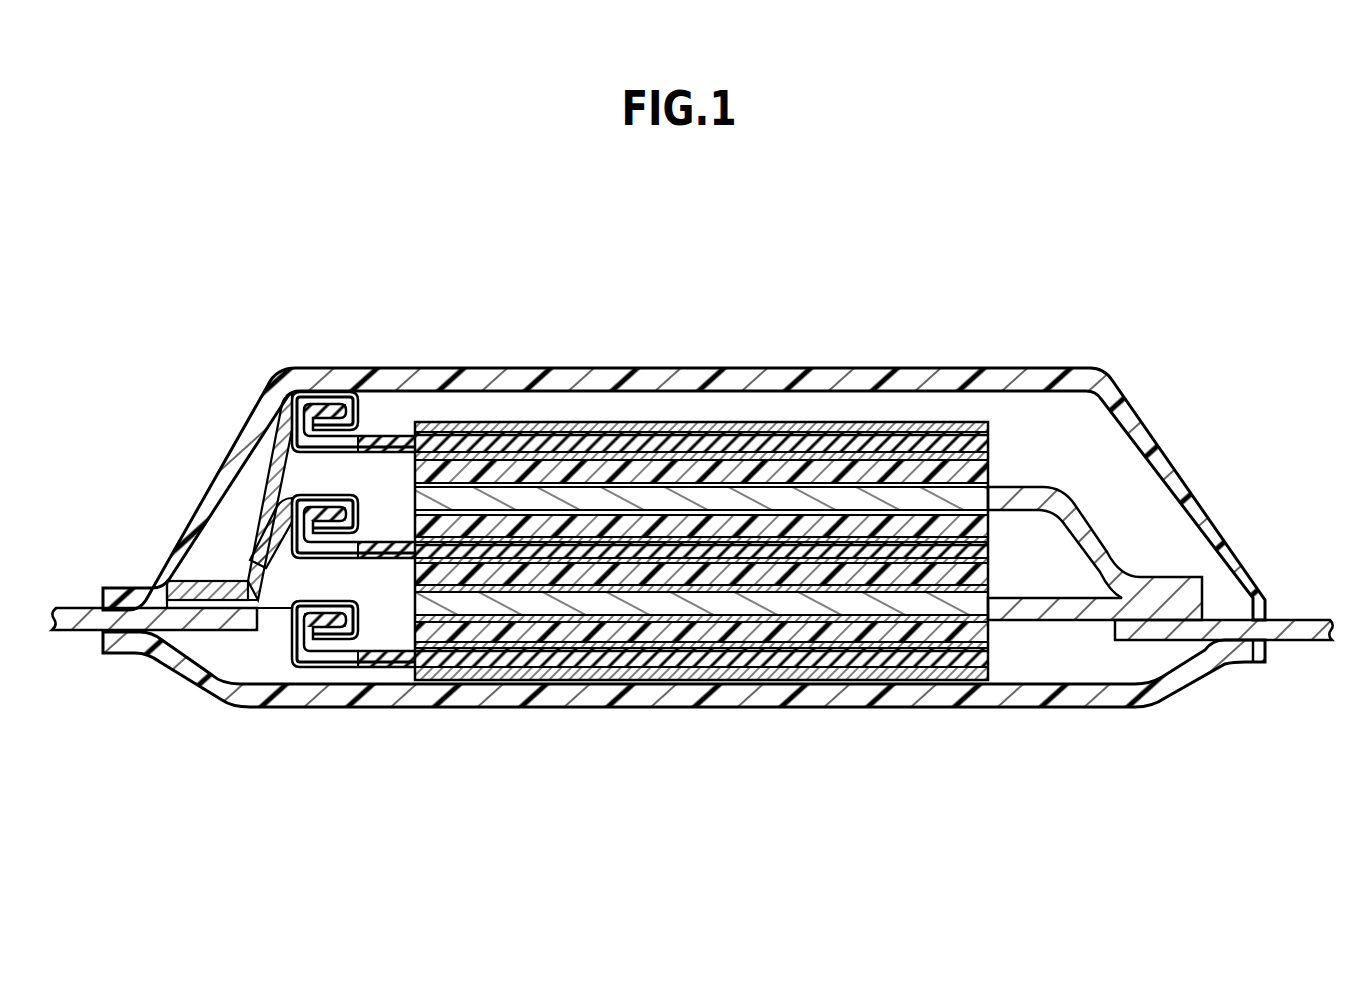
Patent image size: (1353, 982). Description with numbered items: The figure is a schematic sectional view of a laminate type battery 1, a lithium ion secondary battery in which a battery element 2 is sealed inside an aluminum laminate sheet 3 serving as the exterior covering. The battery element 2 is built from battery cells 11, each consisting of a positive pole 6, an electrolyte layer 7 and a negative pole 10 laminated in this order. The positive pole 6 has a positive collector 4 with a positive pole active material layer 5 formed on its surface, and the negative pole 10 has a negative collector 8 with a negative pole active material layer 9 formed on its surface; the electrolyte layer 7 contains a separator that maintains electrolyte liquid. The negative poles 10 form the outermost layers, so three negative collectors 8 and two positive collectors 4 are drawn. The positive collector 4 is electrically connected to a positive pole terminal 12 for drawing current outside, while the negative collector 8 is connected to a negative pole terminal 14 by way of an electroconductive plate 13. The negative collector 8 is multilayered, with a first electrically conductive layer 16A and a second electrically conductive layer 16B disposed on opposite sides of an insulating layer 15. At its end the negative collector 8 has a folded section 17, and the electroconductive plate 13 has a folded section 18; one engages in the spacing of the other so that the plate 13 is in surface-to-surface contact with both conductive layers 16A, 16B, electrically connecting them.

The laminate type battery 1 is at (116, 230).
The battery element 2 is at (749, 425).
The aluminum laminate sheet 3 is at (957, 371).
The positive collector 4 is at (688, 500).
The positive pole active material layer 5 is at (636, 525).
The positive pole 6 is at (808, 427).
The electrolyte layer 7 is at (596, 486).
The negative collector 8 is at (642, 463).
The negative pole active material layer 9 is at (567, 470).
The negative pole 10 is at (642, 446).
The battery cell 11 is at (749, 425).
The positive pole terminal 12 is at (1286, 630).
The electroconductive plate 13 is at (274, 437).
The negative pole terminal 14 is at (103, 612).
The insulating layer 15 is at (701, 477).
The first electrically conductive layer 16A is at (373, 428).
The second electrically conductive layer 16B is at (408, 440).
The folded section 17 is at (288, 392).
The folded section 18 is at (330, 397).